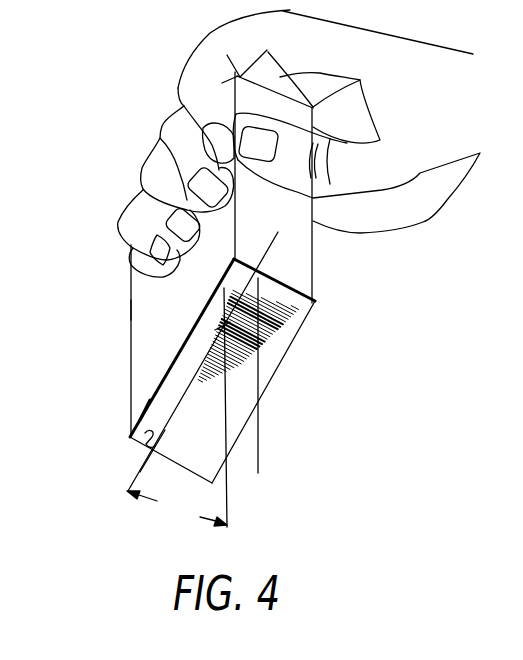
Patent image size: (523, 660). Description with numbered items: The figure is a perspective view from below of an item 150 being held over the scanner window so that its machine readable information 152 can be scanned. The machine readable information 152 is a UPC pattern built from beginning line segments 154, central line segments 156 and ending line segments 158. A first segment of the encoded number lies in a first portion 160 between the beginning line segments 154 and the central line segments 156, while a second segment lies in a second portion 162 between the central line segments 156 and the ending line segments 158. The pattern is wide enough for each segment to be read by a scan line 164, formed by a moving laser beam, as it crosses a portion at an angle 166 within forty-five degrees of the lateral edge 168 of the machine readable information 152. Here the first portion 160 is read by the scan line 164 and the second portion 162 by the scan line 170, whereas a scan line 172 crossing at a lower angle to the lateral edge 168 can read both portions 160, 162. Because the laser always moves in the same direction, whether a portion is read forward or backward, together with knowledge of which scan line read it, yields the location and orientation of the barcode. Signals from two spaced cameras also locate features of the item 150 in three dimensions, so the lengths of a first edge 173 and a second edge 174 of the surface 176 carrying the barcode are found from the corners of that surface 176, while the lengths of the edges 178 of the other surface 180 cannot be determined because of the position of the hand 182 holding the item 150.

The item 150 is at (313, 287).
The machine readable information 152 is at (289, 302).
The beginning line segments 154 is at (270, 405).
The central line segments 156 is at (280, 347).
The ending line segments 158 is at (300, 305).
The first portion 160 is at (220, 327).
The second portion 162 is at (200, 297).
The scan line 164 is at (232, 487).
The angle 166 is at (177, 510).
The lateral edge 168 is at (210, 337).
The scan line 170 is at (262, 452).
The scan line 172 is at (280, 243).
The first edge 173 is at (140, 418).
The second edge 174 is at (145, 446).
The surface 176 is at (150, 452).
The edges 178 is at (123, 307).
The surface 180 is at (130, 255).
The hand 182 is at (197, 53).